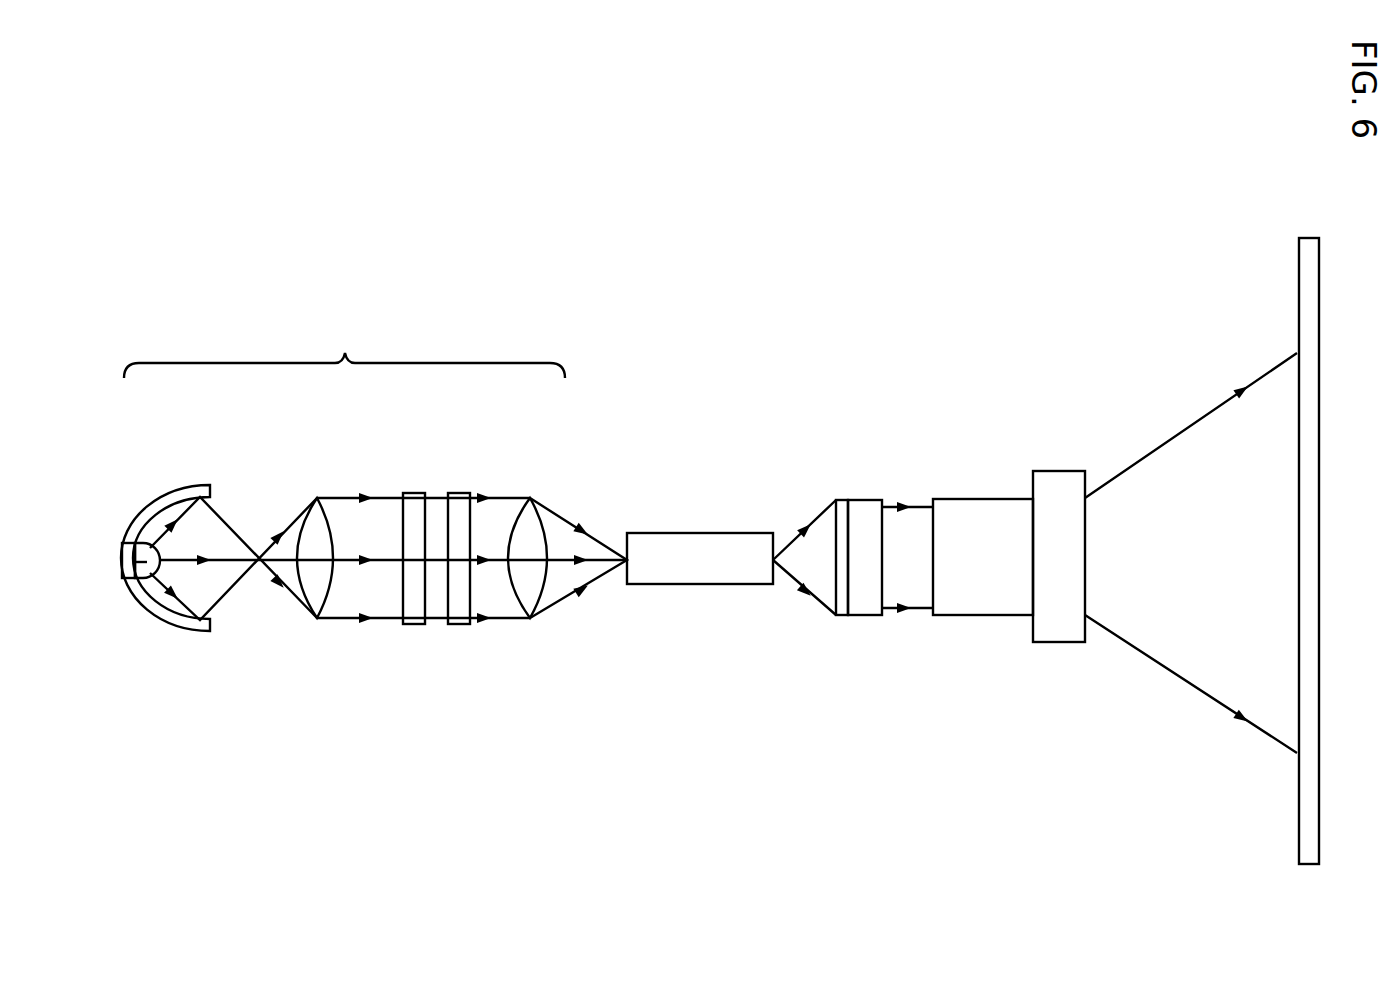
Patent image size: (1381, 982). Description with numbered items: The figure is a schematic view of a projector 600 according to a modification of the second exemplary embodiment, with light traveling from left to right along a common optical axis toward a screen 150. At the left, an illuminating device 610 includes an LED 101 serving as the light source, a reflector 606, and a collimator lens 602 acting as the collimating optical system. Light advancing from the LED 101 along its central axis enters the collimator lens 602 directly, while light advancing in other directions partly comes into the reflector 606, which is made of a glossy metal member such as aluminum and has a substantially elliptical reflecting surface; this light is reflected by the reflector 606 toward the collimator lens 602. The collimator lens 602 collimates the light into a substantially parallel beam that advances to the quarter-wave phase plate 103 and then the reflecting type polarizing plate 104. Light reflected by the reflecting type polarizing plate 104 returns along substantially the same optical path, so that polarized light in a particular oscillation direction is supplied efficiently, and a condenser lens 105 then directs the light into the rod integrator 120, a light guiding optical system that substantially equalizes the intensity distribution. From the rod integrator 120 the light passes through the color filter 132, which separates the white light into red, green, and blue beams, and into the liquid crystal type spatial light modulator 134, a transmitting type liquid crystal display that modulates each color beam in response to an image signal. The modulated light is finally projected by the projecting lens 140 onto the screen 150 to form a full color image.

The LED 101 is at (121, 562).
The reflector 606 is at (176, 500).
The collimator lens 602 is at (317, 522).
The λ/4 phase plate 103 is at (405, 492).
The reflecting type polarizing plate 104 is at (457, 492).
The condenser lens 105 is at (525, 520).
The illuminating device 610 is at (344, 347).
The rod integrator 120 is at (750, 533).
The color filter 132 is at (840, 507).
The liquid crystal type spatial light modulator 134 is at (873, 503).
The projecting lens 140 is at (1067, 480).
The screen 150 is at (1305, 245).
The projector 600 is at (990, 272).